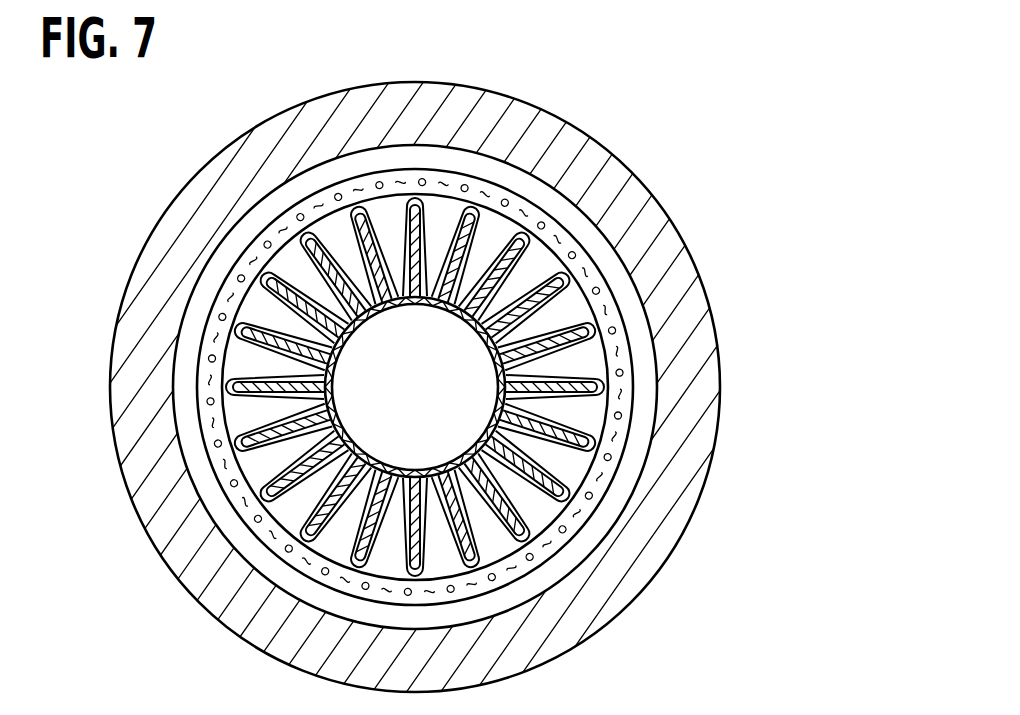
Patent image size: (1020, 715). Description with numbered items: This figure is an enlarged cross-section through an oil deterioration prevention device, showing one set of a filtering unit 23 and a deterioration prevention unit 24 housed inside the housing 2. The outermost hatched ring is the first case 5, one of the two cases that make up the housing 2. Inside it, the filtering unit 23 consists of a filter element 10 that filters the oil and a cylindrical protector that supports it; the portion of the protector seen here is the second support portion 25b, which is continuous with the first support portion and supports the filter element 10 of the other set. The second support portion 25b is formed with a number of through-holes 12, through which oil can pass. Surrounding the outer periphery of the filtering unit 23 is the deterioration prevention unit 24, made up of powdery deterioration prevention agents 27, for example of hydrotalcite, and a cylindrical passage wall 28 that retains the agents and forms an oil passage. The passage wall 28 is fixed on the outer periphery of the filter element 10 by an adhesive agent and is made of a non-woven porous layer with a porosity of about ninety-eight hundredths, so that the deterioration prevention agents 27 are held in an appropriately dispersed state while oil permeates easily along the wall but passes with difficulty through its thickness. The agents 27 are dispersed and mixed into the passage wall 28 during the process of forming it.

The housing 2 is at (575, 122).
The first case 5 is at (625, 185).
The filter element 10 is at (469, 421).
The through-holes 12 is at (421, 470).
The filtering unit 23 is at (555, 312).
The deterioration prevention unit 24 is at (632, 333).
The second support portion 25b is at (392, 303).
The deterioration prevention agents 27 is at (607, 457).
The passage wall 28 is at (612, 483).